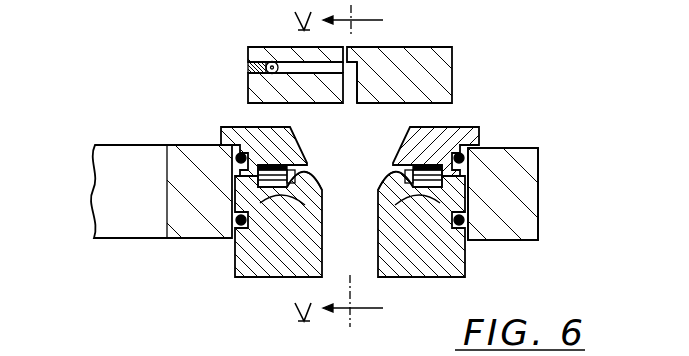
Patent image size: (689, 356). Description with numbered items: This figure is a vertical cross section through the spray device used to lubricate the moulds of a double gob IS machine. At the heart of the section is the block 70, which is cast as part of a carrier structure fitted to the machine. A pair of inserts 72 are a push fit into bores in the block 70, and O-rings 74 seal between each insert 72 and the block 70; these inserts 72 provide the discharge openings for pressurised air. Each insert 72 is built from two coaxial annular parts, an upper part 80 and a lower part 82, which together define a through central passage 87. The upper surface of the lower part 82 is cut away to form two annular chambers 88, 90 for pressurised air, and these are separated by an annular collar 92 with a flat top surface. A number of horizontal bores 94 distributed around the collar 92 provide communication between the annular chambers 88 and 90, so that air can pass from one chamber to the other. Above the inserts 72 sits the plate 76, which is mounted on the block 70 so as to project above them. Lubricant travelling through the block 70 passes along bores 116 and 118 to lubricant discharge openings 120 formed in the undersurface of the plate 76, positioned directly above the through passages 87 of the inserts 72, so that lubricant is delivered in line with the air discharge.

The block 70 is at (530, 172).
The insert 72 is at (250, 262).
The O-ring 74 is at (466, 157).
The plate 76 is at (434, 72).
The upper part 80 is at (458, 132).
The lower part 82 is at (447, 270).
The through central passage 87 is at (362, 232).
The annular chamber 88 is at (244, 197).
The annular chamber 90 is at (400, 178).
The annular collar 92 is at (303, 157).
The horizontal bore 94 is at (400, 182).
The bore 116 is at (263, 80).
The bore 118 is at (289, 66).
The lubricant discharge opening 120 is at (352, 80).